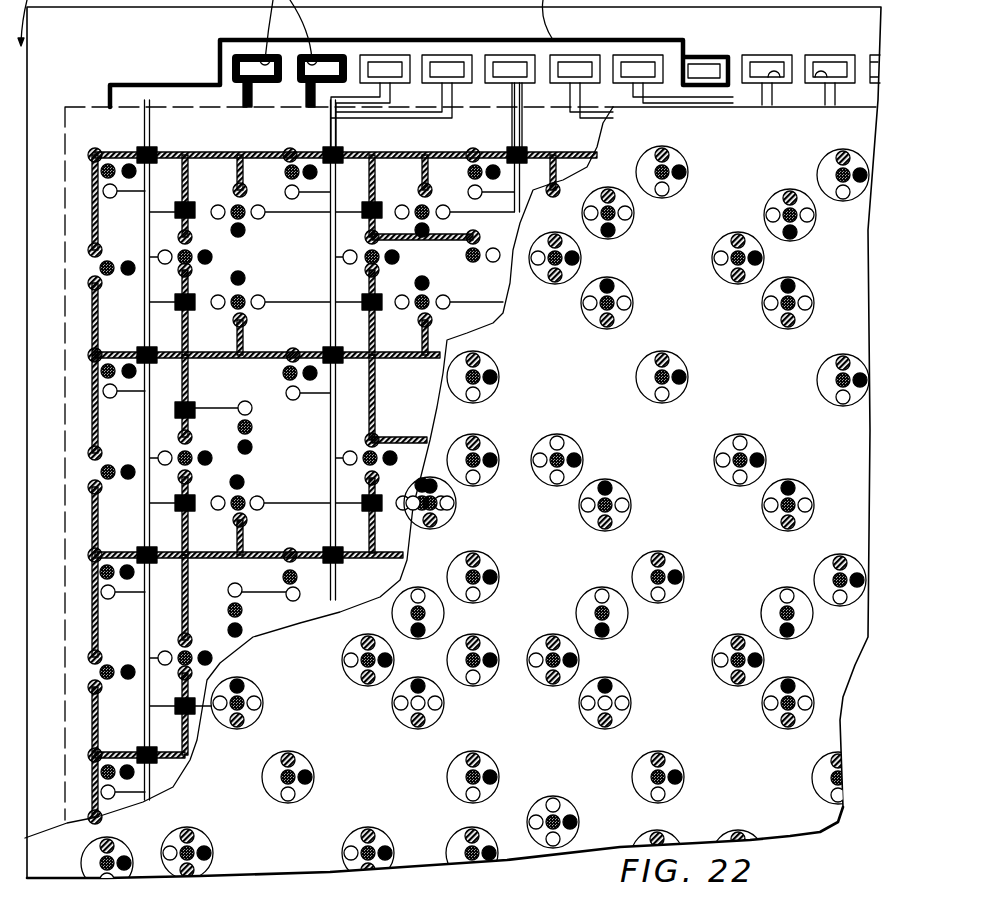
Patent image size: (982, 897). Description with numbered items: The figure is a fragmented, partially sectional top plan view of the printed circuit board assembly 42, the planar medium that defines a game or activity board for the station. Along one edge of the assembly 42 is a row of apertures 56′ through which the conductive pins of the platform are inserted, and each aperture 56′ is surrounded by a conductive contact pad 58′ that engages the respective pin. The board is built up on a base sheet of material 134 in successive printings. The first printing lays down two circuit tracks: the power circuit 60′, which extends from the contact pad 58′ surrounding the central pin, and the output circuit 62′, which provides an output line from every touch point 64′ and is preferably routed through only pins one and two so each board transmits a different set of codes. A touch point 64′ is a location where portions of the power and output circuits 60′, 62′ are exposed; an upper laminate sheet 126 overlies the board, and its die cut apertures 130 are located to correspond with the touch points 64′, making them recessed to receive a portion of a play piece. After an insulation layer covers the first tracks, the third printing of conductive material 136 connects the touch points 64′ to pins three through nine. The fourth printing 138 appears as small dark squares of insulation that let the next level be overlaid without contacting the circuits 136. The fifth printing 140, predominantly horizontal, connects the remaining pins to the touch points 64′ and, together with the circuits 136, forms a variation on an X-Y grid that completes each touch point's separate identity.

The printed circuit board assembly 42 is at (555, 859).
The aperture 56′ is at (819, 78).
The conductive contact pad 58′ is at (232, 68).
The power circuit 60′ is at (100, 268).
The output circuit 62′ is at (313, 92).
The touch point 64′ is at (806, 303).
The upper laminate sheet 126 is at (820, 658).
The die cut aperture 130 is at (817, 380).
The base sheet of material 134 is at (58, 188).
The third printing of conductive material 136 is at (150, 125).
The fourth printing 138 is at (364, 207).
The fifth printing 140 is at (668, 148).